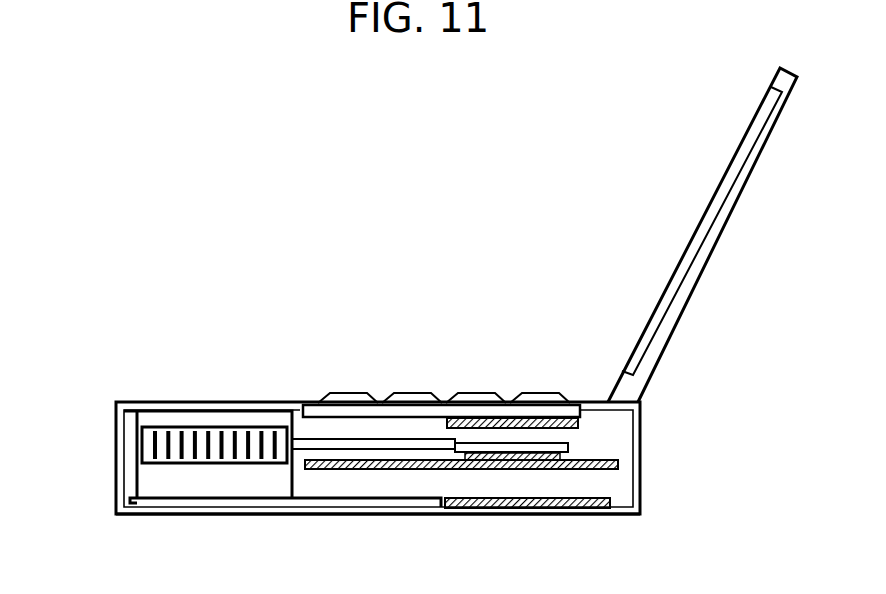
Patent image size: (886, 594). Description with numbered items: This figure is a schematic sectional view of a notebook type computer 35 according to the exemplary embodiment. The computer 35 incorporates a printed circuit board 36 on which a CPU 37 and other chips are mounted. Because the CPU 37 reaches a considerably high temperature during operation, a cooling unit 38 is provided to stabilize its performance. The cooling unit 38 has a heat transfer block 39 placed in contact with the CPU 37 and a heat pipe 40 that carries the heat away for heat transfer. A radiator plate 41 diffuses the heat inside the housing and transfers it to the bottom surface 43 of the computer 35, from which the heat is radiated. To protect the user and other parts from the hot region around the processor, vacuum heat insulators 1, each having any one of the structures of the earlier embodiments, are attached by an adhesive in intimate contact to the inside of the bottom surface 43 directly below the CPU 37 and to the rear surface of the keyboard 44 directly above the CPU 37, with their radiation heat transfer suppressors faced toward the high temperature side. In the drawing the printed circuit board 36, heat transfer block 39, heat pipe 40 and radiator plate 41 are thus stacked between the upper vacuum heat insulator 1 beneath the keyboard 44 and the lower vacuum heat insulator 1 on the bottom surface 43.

The vacuum heat insulator 1 is at (522, 418).
The notebook type computer 35 is at (150, 392).
The printed circuit board 36 is at (600, 472).
The CPU 37 is at (558, 457).
The cooling unit 38 is at (162, 443).
The heat transfer block 39 is at (493, 443).
The heat pipe 40 is at (330, 442).
The radiator plate 41 is at (240, 505).
The bottom surface 43 is at (408, 513).
The keyboard 44 is at (380, 413).